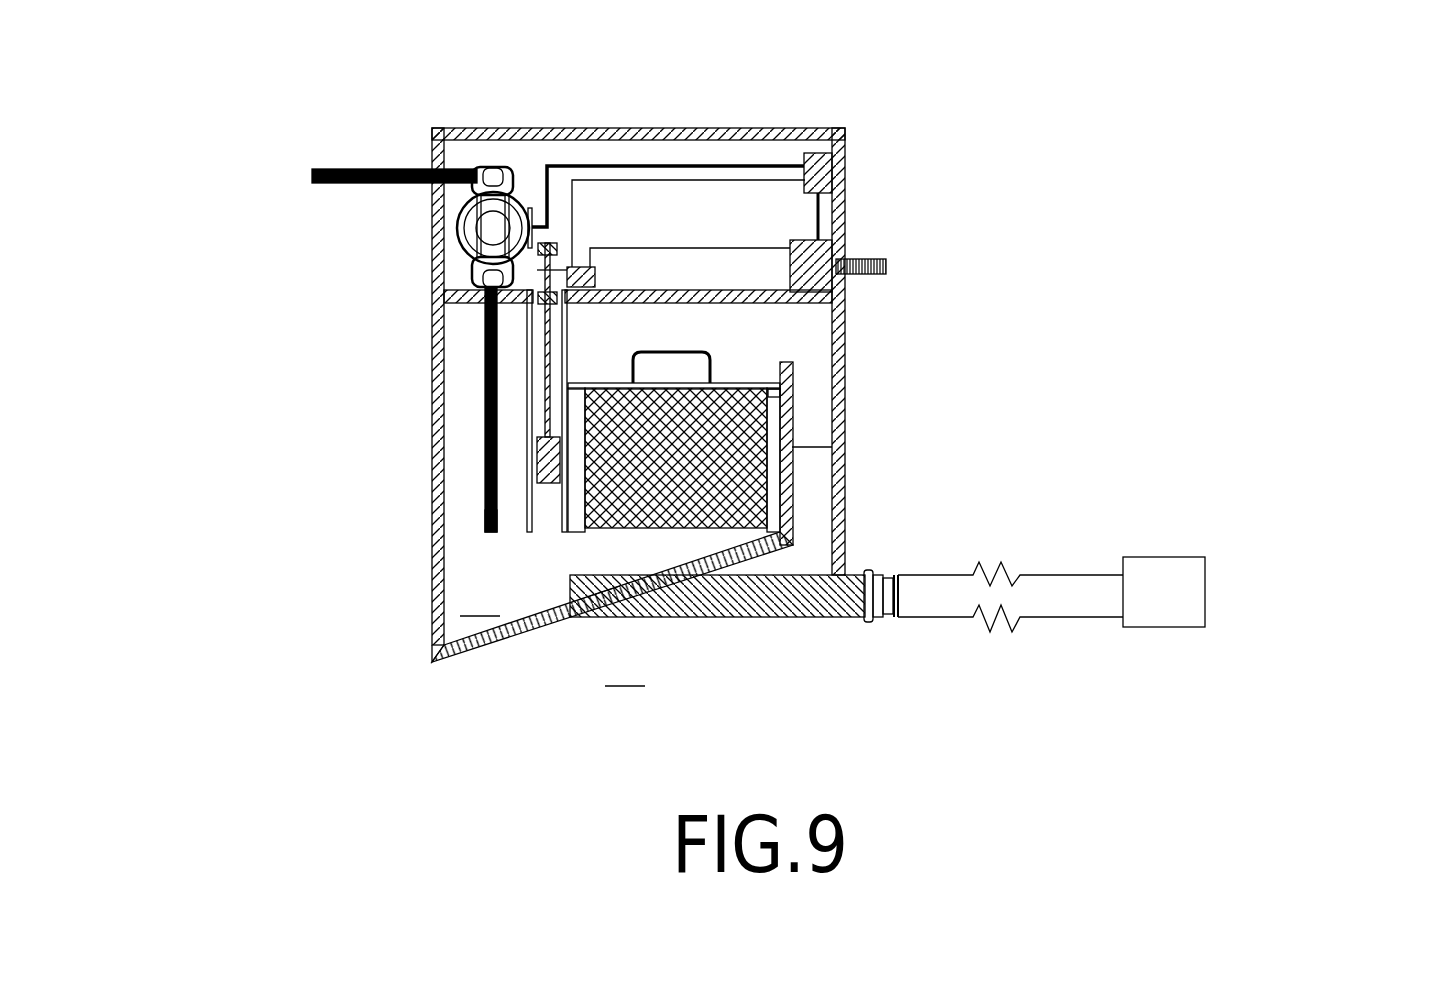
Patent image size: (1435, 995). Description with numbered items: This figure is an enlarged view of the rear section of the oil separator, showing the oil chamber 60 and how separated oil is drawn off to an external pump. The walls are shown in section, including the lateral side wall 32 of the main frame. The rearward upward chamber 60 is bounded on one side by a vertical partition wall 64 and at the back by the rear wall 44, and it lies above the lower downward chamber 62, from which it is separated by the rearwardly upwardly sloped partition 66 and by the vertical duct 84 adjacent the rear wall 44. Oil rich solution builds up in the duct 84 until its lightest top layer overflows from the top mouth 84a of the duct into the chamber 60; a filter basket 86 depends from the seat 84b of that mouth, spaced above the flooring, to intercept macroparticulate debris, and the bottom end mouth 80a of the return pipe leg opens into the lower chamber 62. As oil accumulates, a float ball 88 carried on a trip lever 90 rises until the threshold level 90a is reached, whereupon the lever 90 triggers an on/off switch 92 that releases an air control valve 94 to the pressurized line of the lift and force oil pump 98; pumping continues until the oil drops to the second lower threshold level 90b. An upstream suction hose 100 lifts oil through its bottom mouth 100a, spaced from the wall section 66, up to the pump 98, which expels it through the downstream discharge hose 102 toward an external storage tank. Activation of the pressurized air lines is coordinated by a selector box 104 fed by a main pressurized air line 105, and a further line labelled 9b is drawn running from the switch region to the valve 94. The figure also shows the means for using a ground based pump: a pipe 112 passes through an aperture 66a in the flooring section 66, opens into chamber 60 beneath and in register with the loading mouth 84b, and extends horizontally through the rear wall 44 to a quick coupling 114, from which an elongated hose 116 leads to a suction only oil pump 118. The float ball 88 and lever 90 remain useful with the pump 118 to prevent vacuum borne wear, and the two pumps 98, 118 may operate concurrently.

The lateral side wall 32 is at (638, 175).
The electrical wire 9b is at (696, 137).
The air control valve 94 is at (922, 153).
The selector box 104 is at (926, 233).
The main pressurized air line 105 is at (982, 268).
The trip lever 90 is at (414, 340).
The threshold level 90a is at (622, 317).
The second lower threshold level 90b is at (636, 229).
The on/off switch 92 is at (645, 280).
The float ball 88 is at (444, 440).
The lift and force oil pump 98 is at (397, 228).
The downstream discharge hose 102 is at (309, 215).
The upstream suction hose 100 is at (364, 409).
The bottom mouth 100a is at (352, 473).
The vertical partition wall 64 is at (338, 395).
The rear wall 44 is at (952, 351).
The vertical duct 84 is at (700, 457).
The top mouth 84a is at (965, 430).
The seat 84b is at (897, 378).
The filter basket 86 is at (786, 458).
The bottom end mouth 80a is at (790, 342).
The inclined partition wall 66 is at (545, 638).
The aperture 66a is at (560, 651).
The second rearward upward chamber 60 is at (480, 599).
The third downward chamber 62 is at (625, 669).
The pipe 112 is at (717, 656).
The quick coupling 114 is at (973, 557).
The elongated hose 116 is at (1070, 659).
The suction only oil pump 118 is at (1262, 545).